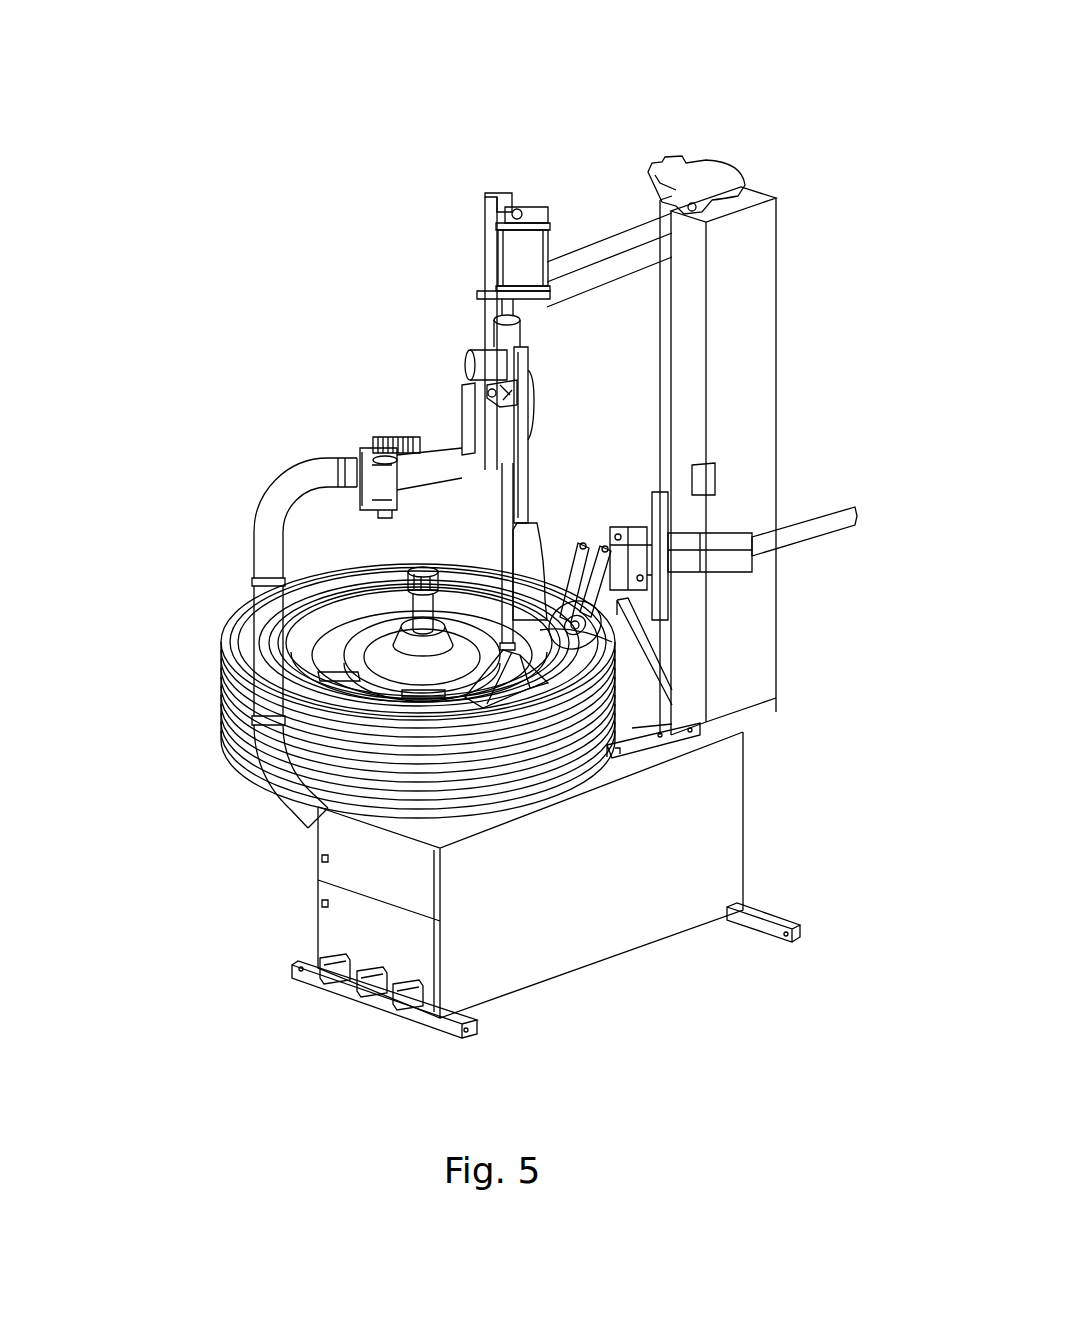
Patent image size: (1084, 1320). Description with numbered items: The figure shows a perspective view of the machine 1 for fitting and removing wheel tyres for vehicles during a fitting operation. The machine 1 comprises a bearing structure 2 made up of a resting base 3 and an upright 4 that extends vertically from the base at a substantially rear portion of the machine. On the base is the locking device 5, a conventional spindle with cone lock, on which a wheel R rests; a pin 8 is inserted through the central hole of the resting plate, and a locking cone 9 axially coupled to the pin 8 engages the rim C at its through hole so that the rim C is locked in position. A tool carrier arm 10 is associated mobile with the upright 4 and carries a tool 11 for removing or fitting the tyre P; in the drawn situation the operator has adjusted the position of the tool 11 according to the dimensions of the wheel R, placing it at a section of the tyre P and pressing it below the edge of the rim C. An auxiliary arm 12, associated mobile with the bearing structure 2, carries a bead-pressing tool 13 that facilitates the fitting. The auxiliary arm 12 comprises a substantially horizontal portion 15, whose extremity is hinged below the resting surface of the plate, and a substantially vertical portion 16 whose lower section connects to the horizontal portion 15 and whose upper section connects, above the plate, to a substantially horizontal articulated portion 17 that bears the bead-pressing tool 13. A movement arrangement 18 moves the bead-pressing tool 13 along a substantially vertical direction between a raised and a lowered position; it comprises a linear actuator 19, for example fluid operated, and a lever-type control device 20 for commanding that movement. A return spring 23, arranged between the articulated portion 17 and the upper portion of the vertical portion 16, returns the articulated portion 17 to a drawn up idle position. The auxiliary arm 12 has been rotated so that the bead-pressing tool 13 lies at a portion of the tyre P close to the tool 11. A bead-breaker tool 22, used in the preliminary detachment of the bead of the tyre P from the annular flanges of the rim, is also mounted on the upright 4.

The machine 1 is at (796, 72).
The bearing structure 2 is at (786, 418).
The resting base 3 is at (690, 850).
The upright 4 is at (752, 290).
The locking device 5 is at (394, 586).
The pin 8 is at (418, 568).
The locking cone 9 is at (340, 607).
The tool carrier arm 10 is at (460, 289).
The tool 11 is at (528, 552).
The auxiliary arm 12 is at (256, 498).
The bead-pressing tool 13 is at (540, 705).
The horizontal portion 15 is at (300, 795).
The vertical portion 16 is at (267, 637).
The articulated portion 17 is at (440, 467).
The movement arrangement 18 is at (540, 408).
The linear actuator 19 is at (537, 480).
The control device 20 is at (507, 392).
The bead-breaker tool 22 is at (700, 605).
The return spring 23 is at (383, 437).
The rim C is at (458, 637).
The wheel R is at (208, 712).
The tyre P is at (243, 737).